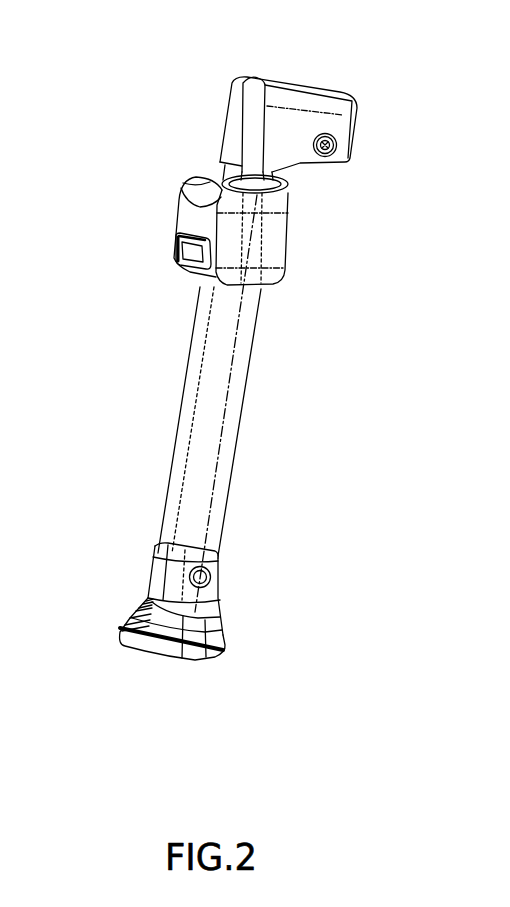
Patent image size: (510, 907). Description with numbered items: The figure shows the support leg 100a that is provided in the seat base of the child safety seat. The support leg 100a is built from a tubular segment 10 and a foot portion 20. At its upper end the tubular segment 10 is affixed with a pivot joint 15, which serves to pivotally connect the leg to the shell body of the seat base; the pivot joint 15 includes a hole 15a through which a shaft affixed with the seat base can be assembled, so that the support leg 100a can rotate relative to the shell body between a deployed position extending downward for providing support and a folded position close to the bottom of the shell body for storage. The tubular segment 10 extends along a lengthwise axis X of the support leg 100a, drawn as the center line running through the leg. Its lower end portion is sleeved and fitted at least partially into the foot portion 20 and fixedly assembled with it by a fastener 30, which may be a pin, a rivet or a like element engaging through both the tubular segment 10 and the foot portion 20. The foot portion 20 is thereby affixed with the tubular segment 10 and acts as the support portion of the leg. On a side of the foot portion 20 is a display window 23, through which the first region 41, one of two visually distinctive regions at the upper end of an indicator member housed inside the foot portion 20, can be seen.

The pivot joint 15 is at (297, 115).
The hole 15a is at (348, 153).
The lengthwise axis X is at (228, 400).
The tubular segment 10 is at (223, 473).
The fastener 30 is at (210, 571).
The foot portion 20 is at (213, 640).
The first region 41 is at (130, 602).
The display window 23 is at (121, 606).
The support leg 100a is at (368, 422).